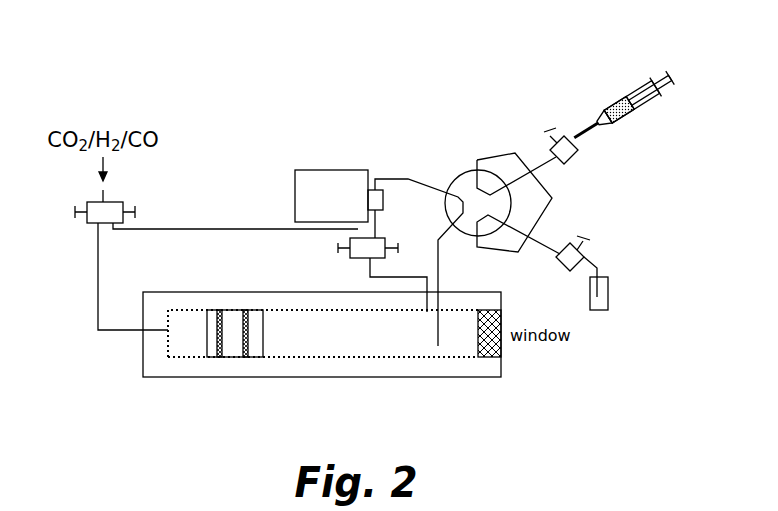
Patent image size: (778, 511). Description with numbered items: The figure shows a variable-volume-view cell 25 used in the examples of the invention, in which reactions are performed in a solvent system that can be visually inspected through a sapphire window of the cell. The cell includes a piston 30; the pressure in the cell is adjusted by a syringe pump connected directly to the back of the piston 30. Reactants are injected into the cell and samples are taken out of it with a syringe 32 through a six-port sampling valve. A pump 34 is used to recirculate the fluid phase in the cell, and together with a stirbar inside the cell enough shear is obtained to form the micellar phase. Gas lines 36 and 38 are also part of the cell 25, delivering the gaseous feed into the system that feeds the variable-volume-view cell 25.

The variable-volume-view cell 25 is at (320, 132).
The piston 30 is at (248, 364).
The syringe 32 is at (628, 125).
The pump 34 is at (292, 210).
The gas line 36 is at (365, 268).
The gas line 38 is at (104, 270).